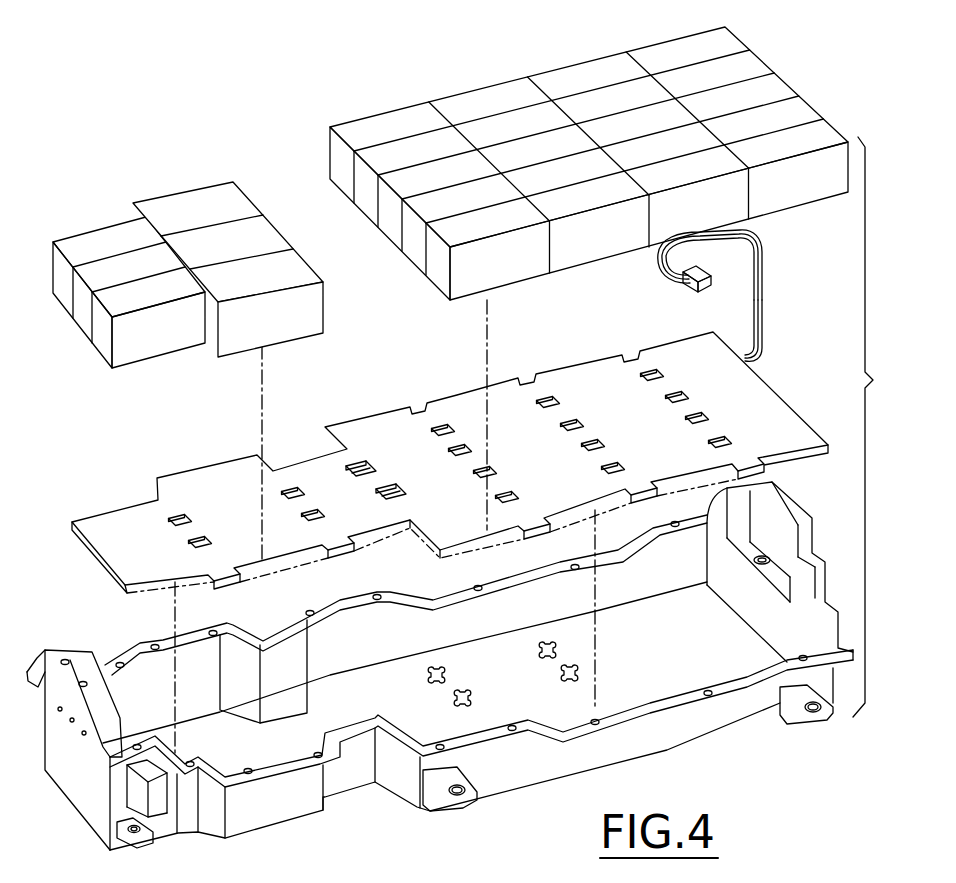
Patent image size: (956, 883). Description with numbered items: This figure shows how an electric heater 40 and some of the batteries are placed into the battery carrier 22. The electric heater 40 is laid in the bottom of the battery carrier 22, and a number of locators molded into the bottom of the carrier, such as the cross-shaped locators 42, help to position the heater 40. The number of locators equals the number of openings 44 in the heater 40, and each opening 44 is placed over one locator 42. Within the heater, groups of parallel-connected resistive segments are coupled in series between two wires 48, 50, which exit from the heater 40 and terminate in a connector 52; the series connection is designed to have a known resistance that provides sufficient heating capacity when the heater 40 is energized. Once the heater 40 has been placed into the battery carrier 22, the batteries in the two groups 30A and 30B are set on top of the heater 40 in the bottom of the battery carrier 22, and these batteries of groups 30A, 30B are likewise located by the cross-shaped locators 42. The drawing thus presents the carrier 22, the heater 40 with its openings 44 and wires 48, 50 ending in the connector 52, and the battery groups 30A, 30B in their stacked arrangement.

The battery carrier 22 is at (76, 819).
The battery group 30A is at (589, 155).
The battery group 30B is at (181, 258).
The electric heater 40 is at (792, 402).
The cross-shaped locators 42 is at (562, 673).
The openings 44 is at (290, 517).
The wire 48 is at (748, 240).
The wire 50 is at (768, 278).
The connector 52 is at (697, 283).